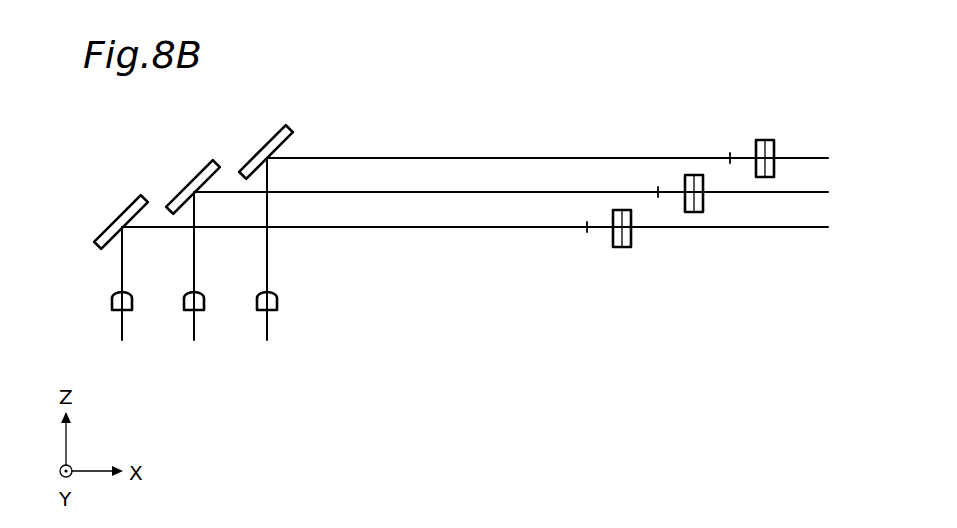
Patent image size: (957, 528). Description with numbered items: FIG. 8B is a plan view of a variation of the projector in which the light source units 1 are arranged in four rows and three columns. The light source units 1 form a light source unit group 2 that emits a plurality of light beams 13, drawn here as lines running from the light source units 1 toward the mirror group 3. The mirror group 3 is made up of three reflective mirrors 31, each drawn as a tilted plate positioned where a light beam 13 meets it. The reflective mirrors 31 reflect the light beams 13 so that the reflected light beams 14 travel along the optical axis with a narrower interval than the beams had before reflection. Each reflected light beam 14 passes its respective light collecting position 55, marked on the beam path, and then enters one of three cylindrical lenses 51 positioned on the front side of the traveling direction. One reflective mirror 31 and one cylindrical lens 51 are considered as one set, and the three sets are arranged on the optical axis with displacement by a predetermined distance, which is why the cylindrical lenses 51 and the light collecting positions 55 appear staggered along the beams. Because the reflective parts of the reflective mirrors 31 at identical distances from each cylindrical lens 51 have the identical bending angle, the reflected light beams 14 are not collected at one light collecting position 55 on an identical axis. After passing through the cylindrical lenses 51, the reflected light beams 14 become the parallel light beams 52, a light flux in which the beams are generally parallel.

The light source unit 1 is at (257, 306).
The light source unit group 2 is at (214, 318).
The mirror group 3 is at (222, 150).
The light beam 13 is at (267, 256).
The reflected light beam 14 is at (433, 158).
The reflective mirror 31 is at (247, 160).
The cylindrical lens 51 is at (765, 177).
The parallel light beam 52 is at (785, 158).
The light collecting position 55 is at (588, 210).